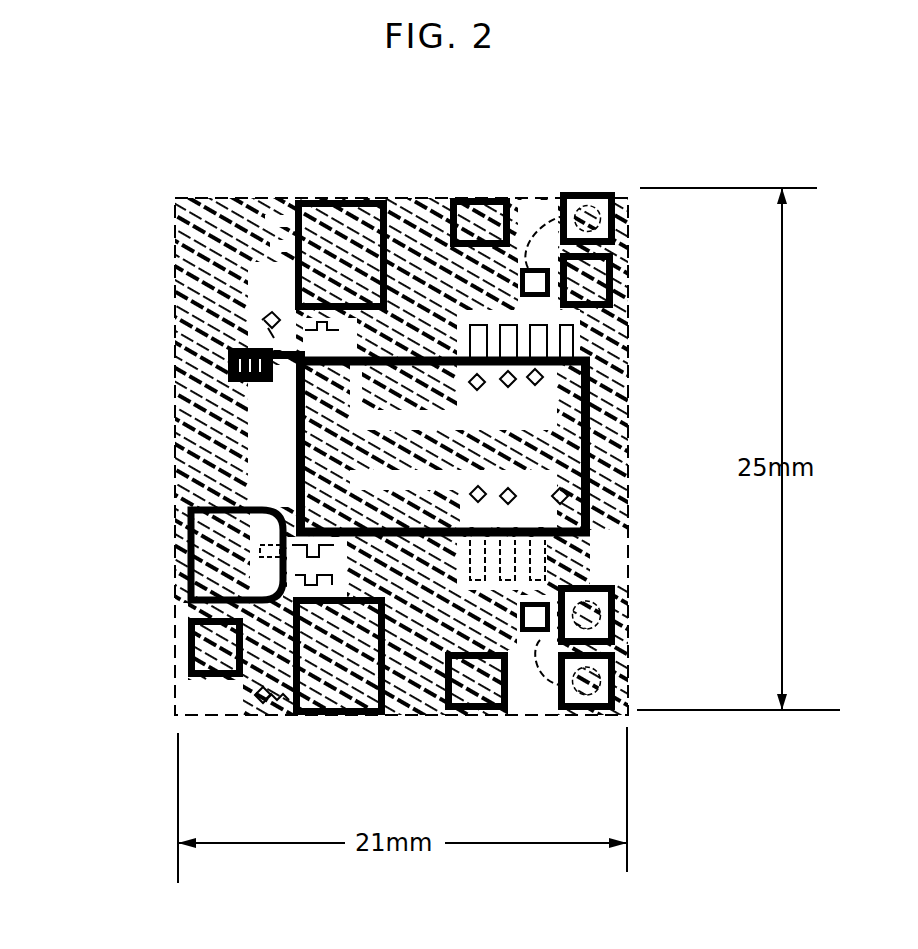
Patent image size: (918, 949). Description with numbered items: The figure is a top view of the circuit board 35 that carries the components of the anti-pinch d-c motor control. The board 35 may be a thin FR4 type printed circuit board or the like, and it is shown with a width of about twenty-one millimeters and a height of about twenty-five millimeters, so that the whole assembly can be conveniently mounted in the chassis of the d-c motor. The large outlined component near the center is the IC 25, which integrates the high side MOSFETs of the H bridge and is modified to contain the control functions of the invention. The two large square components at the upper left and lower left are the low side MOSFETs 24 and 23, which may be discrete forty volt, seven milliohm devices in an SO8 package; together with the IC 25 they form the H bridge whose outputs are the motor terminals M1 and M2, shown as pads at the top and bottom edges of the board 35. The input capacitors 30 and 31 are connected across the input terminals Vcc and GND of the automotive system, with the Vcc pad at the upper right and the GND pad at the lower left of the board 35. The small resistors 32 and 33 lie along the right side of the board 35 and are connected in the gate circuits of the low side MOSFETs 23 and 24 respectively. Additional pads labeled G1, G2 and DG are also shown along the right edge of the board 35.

The circuit board 35 is at (218, 192).
The low side MOSFET 24 is at (327, 200).
The low side MOSFET 23 is at (340, 715).
The IC 25 is at (590, 433).
The input capacitor 30 is at (188, 520).
The input capacitor 31 is at (222, 375).
The resistor 32 is at (540, 298).
The resistor 33 is at (535, 603).
The motor input terminal M1 is at (478, 207).
The motor input terminal M2 is at (482, 690).
The ground terminal G1 is at (587, 212).
The ground terminal G2 is at (588, 690).
The input terminal Vcc is at (592, 282).
The digital ground terminal DG is at (590, 613).
The input terminal GND is at (190, 657).